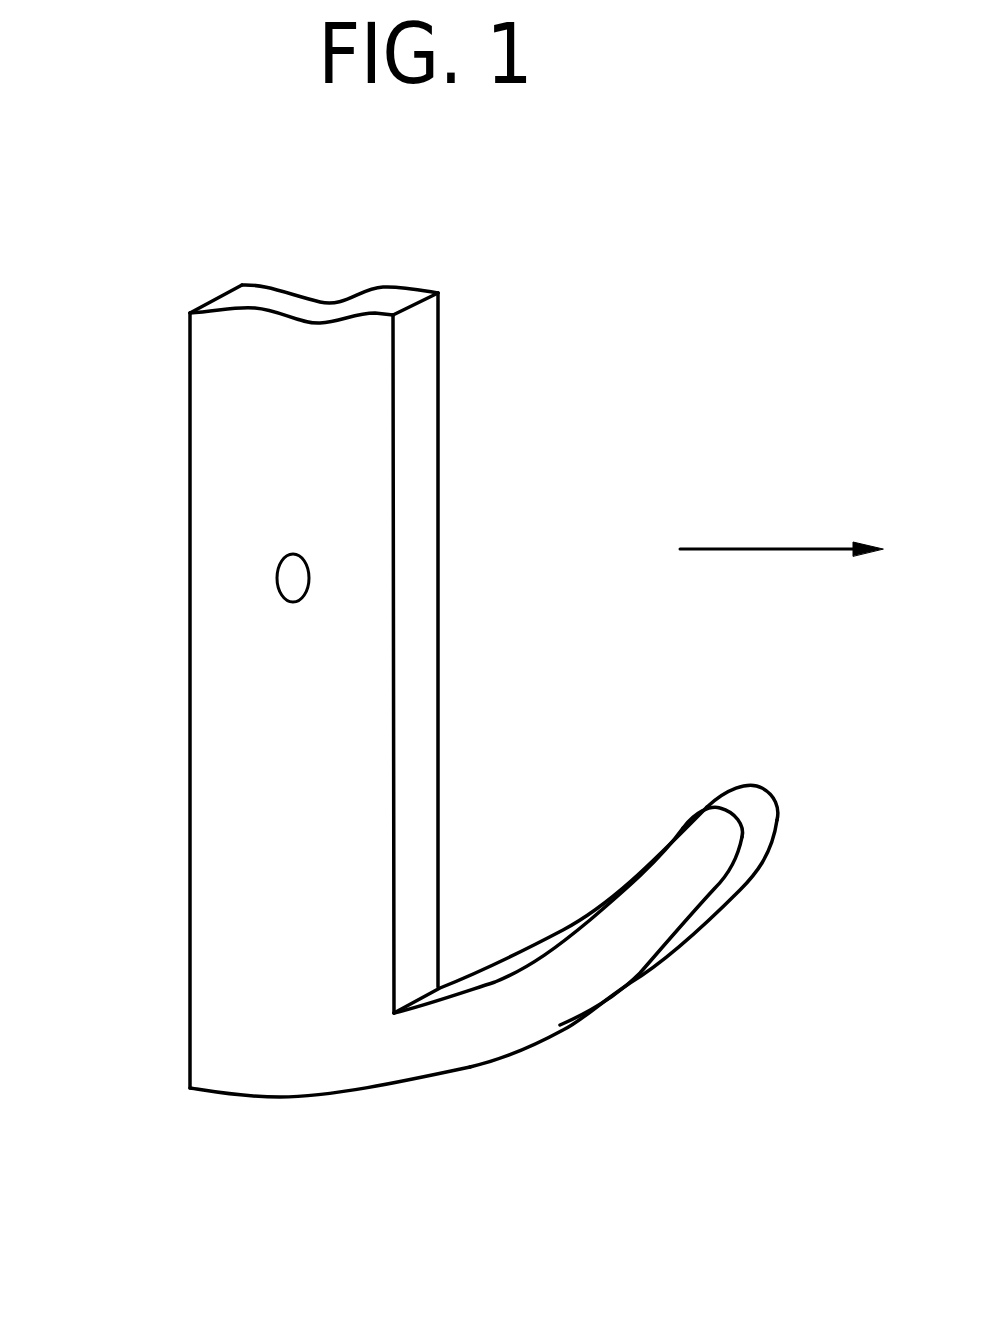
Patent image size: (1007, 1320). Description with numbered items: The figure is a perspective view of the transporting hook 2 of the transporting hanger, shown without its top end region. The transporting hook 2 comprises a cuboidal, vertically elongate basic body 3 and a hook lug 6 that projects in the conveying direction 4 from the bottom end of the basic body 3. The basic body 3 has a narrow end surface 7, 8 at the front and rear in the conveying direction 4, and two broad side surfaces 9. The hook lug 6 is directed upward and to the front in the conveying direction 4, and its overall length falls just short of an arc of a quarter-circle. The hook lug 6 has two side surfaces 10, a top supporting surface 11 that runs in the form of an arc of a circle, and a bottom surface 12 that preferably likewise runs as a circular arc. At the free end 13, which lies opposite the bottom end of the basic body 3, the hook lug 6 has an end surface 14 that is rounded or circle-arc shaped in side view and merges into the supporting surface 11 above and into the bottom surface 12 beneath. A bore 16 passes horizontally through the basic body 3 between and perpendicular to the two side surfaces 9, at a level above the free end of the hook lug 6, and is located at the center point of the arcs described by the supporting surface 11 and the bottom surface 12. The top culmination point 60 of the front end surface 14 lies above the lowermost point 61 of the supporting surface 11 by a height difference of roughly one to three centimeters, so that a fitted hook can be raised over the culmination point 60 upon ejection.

The transporting hook 2 is at (605, 445).
The basic body 3 is at (223, 472).
The conveying direction 4 is at (780, 548).
The hook lug 6 is at (632, 957).
The narrow end surface 7 is at (415, 573).
The narrow end surface 8 is at (165, 638).
The side surface 9 is at (215, 822).
The side surface 10 is at (503, 1037).
The supporting surface 11 is at (455, 988).
The bottom surface 12 is at (733, 880).
The free end 13 is at (697, 842).
The end surface 14 is at (758, 813).
The bore 16 is at (290, 575).
The top culmination point 60 is at (727, 793).
The lowermost point 61 is at (420, 972).